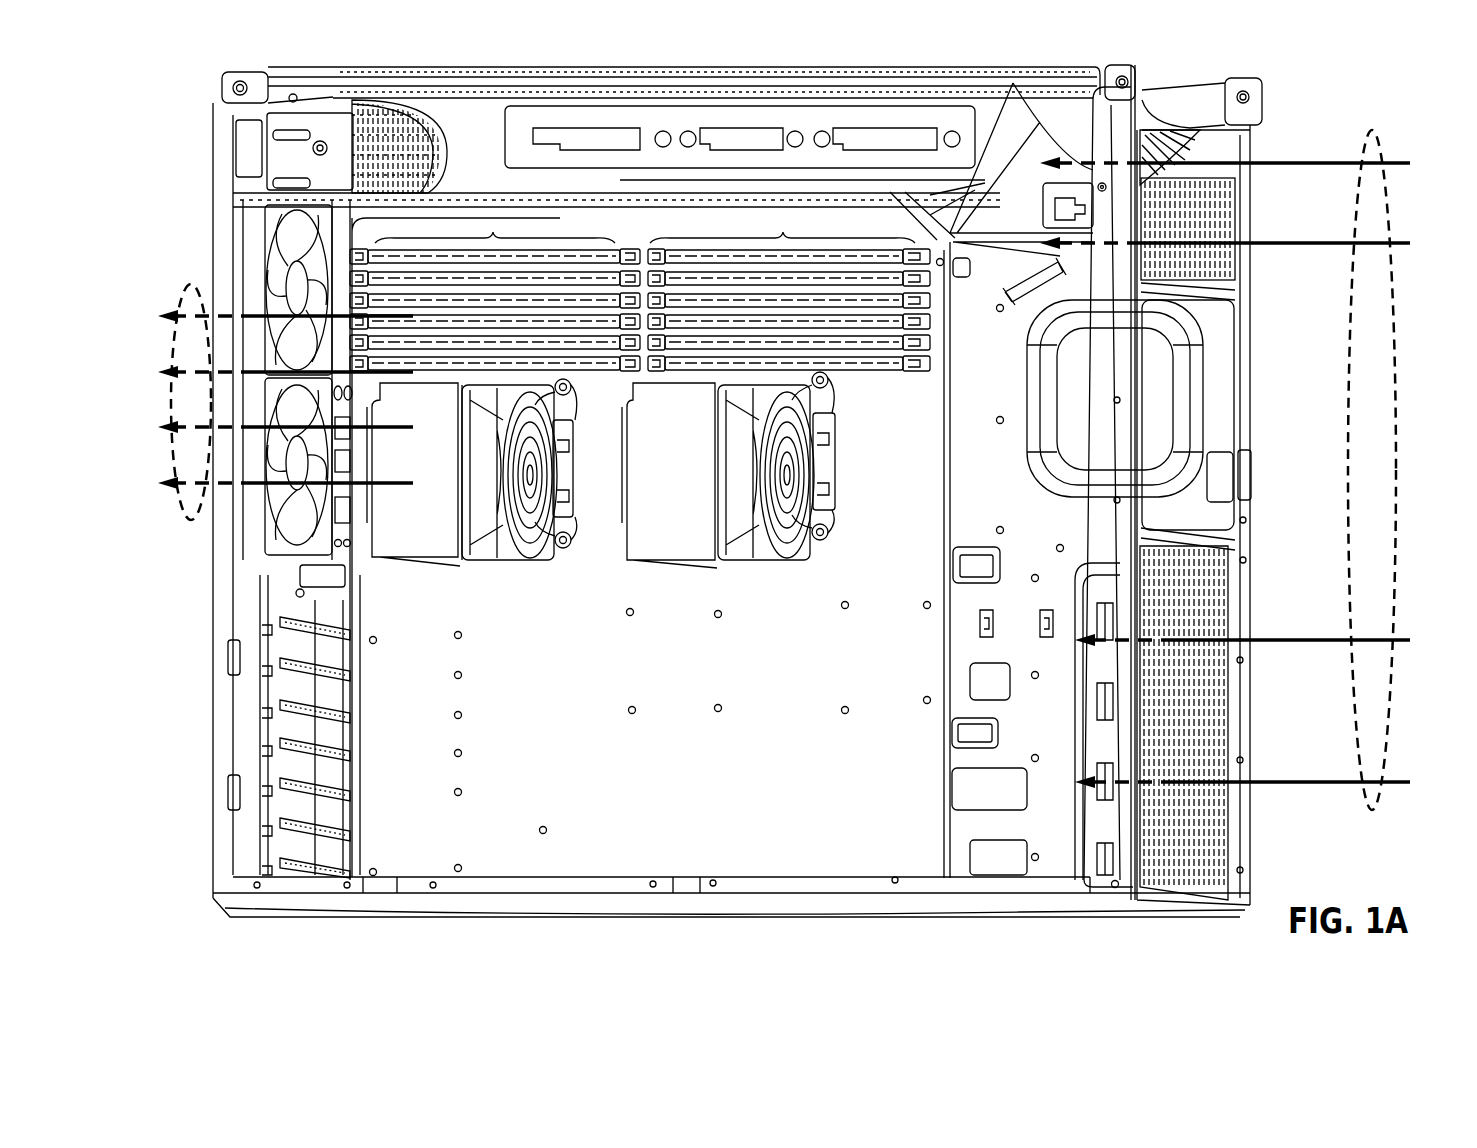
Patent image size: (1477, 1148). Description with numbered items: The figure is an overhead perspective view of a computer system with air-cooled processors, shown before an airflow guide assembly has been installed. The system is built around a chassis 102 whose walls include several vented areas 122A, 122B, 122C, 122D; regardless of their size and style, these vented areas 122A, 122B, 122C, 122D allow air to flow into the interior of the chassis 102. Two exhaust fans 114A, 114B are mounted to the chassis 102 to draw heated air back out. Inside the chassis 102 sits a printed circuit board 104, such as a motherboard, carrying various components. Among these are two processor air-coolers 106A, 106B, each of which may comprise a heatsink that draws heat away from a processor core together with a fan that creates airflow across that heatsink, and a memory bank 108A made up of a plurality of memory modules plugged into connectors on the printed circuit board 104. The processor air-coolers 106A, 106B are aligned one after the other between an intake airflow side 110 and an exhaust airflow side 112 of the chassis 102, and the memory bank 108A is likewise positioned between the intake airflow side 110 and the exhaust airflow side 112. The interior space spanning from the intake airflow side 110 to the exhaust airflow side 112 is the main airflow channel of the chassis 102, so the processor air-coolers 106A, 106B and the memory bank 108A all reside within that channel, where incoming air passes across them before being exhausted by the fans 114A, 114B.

The chassis 102 is at (1250, 593).
The printed circuit board 104 is at (950, 447).
The processor air-cooler 106A is at (723, 563).
The processor air-cooler 106B is at (447, 567).
The memory bank 108A is at (640, 289).
The intake airflow side 110 is at (1350, 350).
The exhaust airflow side 112 is at (190, 305).
The exhaust fan 114A is at (293, 493).
The exhaust fan 114B is at (297, 290).
The vented area 122A is at (1187, 728).
The vented area 122B is at (1180, 233).
The vented area 122C is at (1177, 150).
The vented area 122D is at (393, 132).